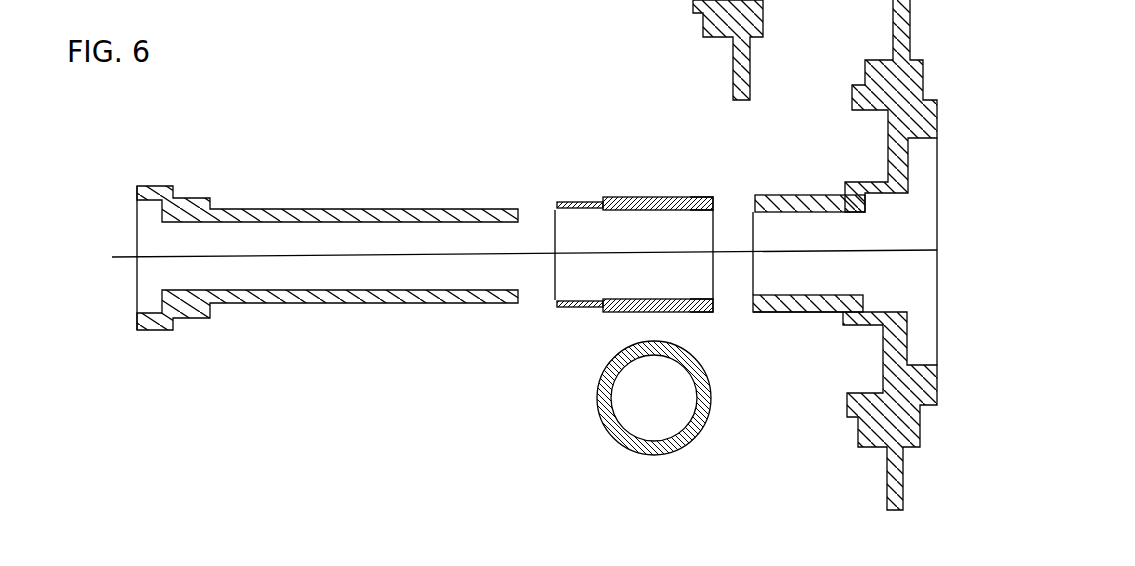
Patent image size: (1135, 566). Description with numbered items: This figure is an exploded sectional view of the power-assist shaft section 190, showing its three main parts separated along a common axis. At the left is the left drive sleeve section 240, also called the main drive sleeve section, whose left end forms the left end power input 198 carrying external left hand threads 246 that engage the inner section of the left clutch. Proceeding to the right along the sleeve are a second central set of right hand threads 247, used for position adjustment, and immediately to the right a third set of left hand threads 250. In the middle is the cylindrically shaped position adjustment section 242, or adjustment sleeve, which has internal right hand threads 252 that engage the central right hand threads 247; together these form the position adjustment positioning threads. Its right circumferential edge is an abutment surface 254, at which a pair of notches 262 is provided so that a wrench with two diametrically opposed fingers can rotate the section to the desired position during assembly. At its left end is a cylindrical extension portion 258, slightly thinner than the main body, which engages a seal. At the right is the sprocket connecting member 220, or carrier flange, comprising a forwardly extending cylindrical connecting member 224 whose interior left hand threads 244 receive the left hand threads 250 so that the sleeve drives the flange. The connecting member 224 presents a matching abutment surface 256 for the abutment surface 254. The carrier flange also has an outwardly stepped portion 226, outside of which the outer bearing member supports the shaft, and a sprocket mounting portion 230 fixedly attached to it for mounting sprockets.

The power-assist shaft section 190 is at (291, 207).
The left end power input 198 is at (175, 187).
The sprocket connecting member 220 is at (857, 255).
The connecting member 224 is at (778, 312).
The outwardly stepped portion 226 is at (848, 325).
The sprocket mounting portion 230 is at (855, 68).
The left drive sleeve section 240 is at (225, 182).
The position adjustment section 242 is at (618, 314).
The interior left hand threads 244 is at (817, 294).
The external left hand threads 246 is at (138, 188).
The right hand threads 247 is at (305, 208).
The left hand threads 250 is at (415, 208).
The internal right hand threads 252 is at (627, 214).
The abutment surface 254 is at (715, 201).
The abutment surface 256 is at (763, 195).
The cylindrical extension portion 258 is at (573, 202).
The notches 262 is at (654, 340).